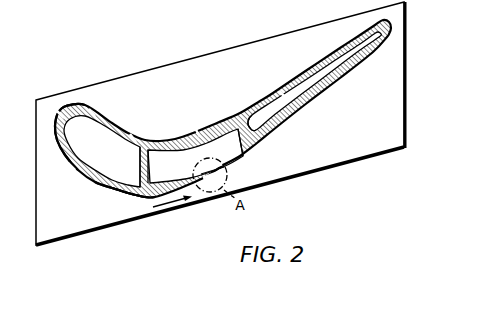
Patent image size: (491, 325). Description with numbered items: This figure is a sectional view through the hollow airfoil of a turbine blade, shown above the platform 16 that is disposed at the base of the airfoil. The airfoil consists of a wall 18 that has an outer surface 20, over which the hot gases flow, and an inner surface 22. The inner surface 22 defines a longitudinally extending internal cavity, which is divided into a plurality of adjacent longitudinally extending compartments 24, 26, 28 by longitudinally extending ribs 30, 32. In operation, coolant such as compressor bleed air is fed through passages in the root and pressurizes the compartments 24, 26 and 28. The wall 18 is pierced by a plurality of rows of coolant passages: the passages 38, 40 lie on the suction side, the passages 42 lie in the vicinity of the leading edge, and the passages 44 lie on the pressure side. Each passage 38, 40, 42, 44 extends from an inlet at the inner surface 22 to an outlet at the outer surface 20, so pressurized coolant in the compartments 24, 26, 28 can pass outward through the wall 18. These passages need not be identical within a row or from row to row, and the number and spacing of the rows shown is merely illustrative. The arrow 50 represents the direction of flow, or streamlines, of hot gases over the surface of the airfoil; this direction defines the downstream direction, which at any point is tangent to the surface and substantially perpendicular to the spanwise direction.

The platform 16 is at (369, 132).
The wall 18 is at (88, 177).
The outer surface 20 is at (110, 193).
The inner surface 22 is at (98, 130).
The compartment 24 is at (97, 155).
The compartment 26 is at (170, 170).
The compartment 28 is at (295, 100).
The rib 30 is at (144, 163).
The rib 32 is at (238, 137).
The coolant passage 38 is at (222, 173).
The coolant passage 40 is at (125, 194).
The coolant passage 42 is at (59, 113).
The coolant passage 44 is at (133, 137).
The arrow 50 is at (170, 207).